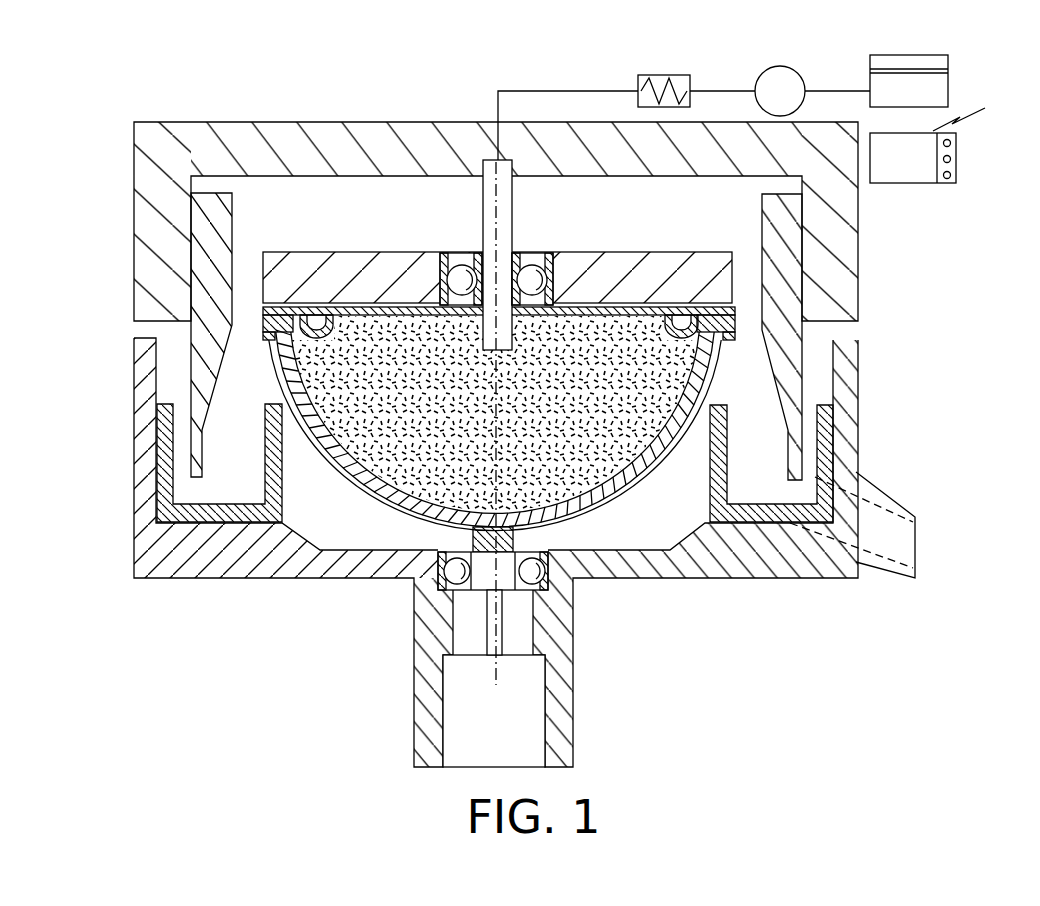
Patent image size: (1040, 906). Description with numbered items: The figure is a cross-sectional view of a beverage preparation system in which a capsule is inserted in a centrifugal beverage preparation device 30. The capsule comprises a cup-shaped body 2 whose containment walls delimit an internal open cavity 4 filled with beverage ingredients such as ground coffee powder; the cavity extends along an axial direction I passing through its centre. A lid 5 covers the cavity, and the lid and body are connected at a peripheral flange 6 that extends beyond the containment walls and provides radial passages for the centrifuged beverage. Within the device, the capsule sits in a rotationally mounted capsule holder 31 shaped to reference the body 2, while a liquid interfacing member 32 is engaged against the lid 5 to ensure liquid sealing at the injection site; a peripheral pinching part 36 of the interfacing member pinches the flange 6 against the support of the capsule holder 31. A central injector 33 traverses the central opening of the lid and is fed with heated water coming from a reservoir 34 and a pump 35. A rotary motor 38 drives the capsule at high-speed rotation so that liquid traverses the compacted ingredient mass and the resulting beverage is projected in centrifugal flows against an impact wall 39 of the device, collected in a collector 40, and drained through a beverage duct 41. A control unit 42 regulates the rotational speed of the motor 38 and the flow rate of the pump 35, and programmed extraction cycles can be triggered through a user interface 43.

The beverage preparation device 30 is at (122, 137).
The impact wall 39 is at (203, 258).
The collector 40 is at (157, 505).
The liquid interfacing member 32 is at (419, 250).
The lid 5 is at (357, 307).
The flange 6 is at (735, 312).
The body 2 is at (400, 510).
The capsule holder 31 is at (640, 487).
The internal open cavity 4 is at (375, 443).
The central injector 33 is at (512, 197).
The rotary motor 38 is at (530, 733).
The axial direction I is at (495, 625).
The beverage duct 41 is at (893, 502).
The peripheral pinching part 36 is at (665, 75).
The pump 35 is at (780, 66).
The reservoir 34 is at (950, 91).
The control unit 42 is at (905, 183).
The user interface 43 is at (958, 160).